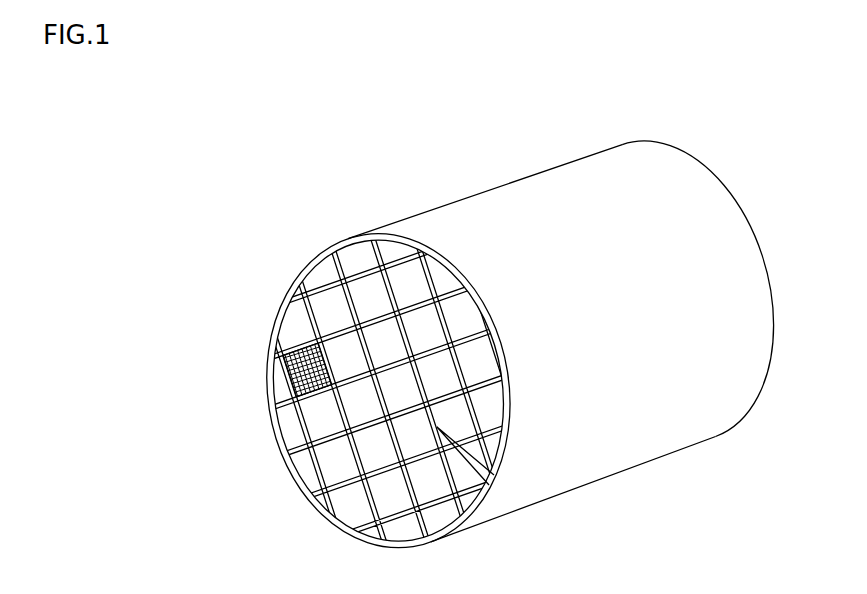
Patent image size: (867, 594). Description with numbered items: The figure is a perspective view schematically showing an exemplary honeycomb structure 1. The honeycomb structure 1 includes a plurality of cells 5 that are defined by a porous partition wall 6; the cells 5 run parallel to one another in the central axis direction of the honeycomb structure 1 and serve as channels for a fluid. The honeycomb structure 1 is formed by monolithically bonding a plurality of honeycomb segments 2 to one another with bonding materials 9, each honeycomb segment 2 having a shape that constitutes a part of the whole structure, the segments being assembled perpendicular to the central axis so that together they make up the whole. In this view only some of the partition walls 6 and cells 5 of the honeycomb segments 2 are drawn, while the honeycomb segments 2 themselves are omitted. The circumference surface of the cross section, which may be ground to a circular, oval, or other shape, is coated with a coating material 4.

The honeycomb structure 1 is at (482, 189).
The honeycomb segment 2 is at (317, 423).
The coating material 4 is at (268, 392).
The cell 5 is at (306, 352).
The porous partition wall 6 is at (287, 358).
The bonding material 9 is at (489, 483).